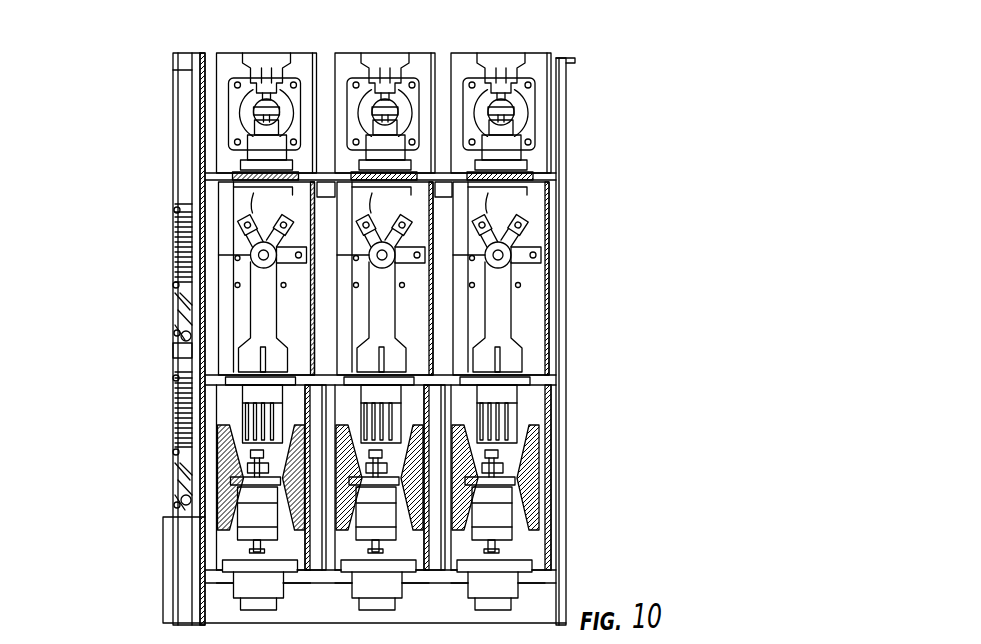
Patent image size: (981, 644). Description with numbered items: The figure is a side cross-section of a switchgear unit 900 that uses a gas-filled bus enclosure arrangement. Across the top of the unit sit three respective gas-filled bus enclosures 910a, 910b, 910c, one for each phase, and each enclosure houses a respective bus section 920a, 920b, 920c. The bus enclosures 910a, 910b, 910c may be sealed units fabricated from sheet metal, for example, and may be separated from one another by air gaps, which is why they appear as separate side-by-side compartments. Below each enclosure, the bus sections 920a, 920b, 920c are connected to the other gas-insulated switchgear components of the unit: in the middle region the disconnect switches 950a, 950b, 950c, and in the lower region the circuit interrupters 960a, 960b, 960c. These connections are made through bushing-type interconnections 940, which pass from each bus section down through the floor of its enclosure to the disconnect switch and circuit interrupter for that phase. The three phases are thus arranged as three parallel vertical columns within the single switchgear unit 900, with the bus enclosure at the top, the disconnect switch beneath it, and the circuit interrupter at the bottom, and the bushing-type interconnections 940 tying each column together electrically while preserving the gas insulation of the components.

The switchgear unit 900 is at (128, 609).
The gas-filled bus enclosure 910a is at (220, 53).
The gas-filled bus enclosure 910b is at (345, 53).
The gas-filled bus enclosure 910c is at (536, 53).
The bus section 920a is at (255, 117).
The bus section 920b is at (393, 106).
The bus section 920c is at (512, 115).
The bushing-type interconnection 940 is at (504, 158).
The disconnect switch 950a is at (250, 253).
The disconnect switch 950b is at (392, 262).
The disconnect switch 950c is at (512, 258).
The circuit interrupter 960a is at (257, 495).
The circuit interrupter 960b is at (378, 495).
The circuit interrupter 960c is at (487, 497).